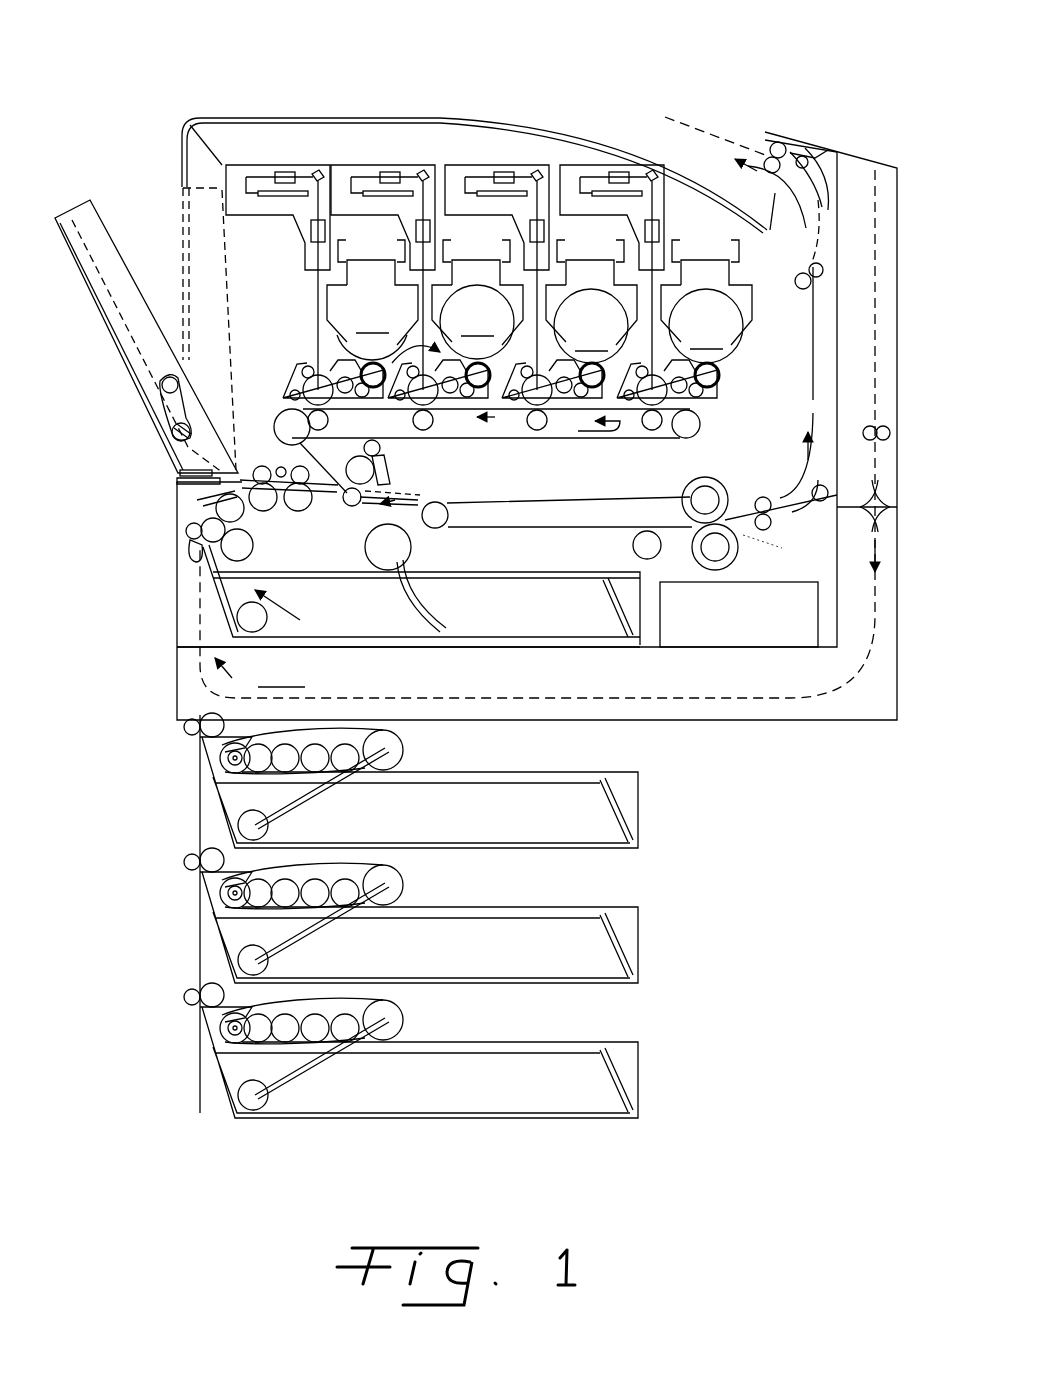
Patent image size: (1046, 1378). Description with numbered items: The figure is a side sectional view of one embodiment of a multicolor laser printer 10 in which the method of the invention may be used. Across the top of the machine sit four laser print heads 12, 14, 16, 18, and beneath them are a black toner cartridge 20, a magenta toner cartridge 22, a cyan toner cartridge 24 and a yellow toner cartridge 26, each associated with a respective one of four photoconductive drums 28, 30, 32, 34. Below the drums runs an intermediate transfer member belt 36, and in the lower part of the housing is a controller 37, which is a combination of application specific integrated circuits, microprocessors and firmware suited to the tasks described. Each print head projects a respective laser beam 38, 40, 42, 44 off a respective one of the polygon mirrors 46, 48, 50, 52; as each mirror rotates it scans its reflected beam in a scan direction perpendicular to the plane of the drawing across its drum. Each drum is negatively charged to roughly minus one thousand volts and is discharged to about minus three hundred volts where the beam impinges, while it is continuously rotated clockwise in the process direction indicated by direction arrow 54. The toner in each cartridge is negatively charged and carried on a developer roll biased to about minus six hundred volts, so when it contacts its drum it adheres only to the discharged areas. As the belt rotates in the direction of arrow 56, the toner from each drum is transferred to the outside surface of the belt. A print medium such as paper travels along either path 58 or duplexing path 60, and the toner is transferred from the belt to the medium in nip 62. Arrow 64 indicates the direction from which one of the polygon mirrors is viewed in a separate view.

The multicolor laser printer 10 is at (722, 86).
The laser print head 12 is at (187, 125).
The laser print head 14 is at (347, 165).
The laser print head 16 is at (465, 165).
The laser print head 18 is at (590, 165).
The black toner cartridge 20 is at (372, 318).
The magenta toner cartridge 22 is at (477, 299).
The cyan toner cartridge 24 is at (591, 301).
The yellow toner cartridge 26 is at (706, 301).
The photoconductive drum 28 is at (307, 392).
The photoconductive drum 30 is at (420, 402).
The photoconductive drum 32 is at (532, 405).
The photoconductive drum 34 is at (654, 400).
The intermediate transfer member belt 36 is at (574, 442).
The controller 37 is at (765, 583).
The laser beam 38 is at (317, 308).
The laser beam 40 is at (370, 178).
The laser beam 42 is at (520, 183).
The laser beam 44 is at (672, 206).
The polygon mirror 46 is at (297, 193).
The polygon mirror 48 is at (416, 190).
The polygon mirror 50 is at (535, 183).
The polygon mirror 52 is at (635, 193).
The direction arrow 54 is at (413, 347).
The arrow 56 is at (622, 432).
The path 58 is at (278, 606).
The duplexing path 60 is at (258, 687).
The nip 62 is at (397, 493).
The arrow 64 is at (158, 50).